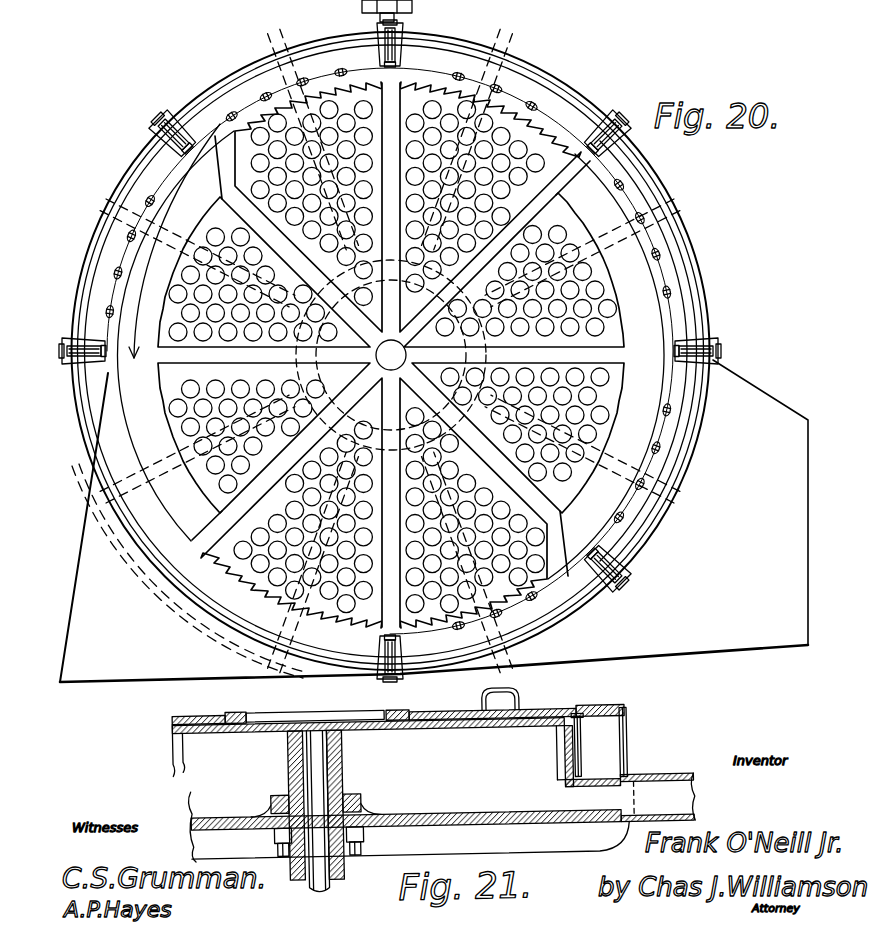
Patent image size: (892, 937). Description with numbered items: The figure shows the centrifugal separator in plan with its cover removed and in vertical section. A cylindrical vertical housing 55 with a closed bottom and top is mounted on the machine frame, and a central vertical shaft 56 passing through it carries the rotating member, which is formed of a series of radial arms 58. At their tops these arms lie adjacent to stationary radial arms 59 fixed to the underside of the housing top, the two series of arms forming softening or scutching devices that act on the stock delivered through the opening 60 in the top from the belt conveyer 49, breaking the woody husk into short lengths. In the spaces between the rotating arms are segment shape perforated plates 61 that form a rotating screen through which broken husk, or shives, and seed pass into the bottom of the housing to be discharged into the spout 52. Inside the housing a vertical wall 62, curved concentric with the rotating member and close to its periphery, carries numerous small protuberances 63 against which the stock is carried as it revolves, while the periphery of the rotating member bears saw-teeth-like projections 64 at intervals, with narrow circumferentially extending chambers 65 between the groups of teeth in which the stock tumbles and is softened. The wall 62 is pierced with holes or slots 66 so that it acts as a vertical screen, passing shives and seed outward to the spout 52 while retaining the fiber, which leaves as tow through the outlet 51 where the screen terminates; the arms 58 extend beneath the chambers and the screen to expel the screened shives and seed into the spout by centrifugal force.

In FIG. 21, the belt conveyer 49 is at (405, 711).
In FIG. 20, the outlet 51 is at (131, 667).
In FIG. 20, the spout 52 is at (434, 521).
In FIG. 21, the spout 52 is at (656, 789).
In FIG. 20, the housing 55 is at (667, 196).
In FIG. 21, the housing 55 is at (628, 742).
In FIG. 21, the central vertical shaft 56 is at (312, 765).
In FIG. 20, the radial arms 58 is at (393, 114).
In FIG. 21, the radial arms 58 is at (399, 749).
In FIG. 20, the radial arms 59 is at (510, 82).
In FIG. 21, the radial arms 59 is at (172, 738).
In FIG. 21, the opening 60 is at (492, 711).
In FIG. 20, the segment shape perforated plates 61 is at (566, 140).
In FIG. 20, the vertical wall 62 is at (150, 196).
In FIG. 21, the vertical wall 62 is at (582, 738).
In FIG. 20, the protuberances 63 is at (651, 250).
In FIG. 20, the saw-teeth-like projections 64 is at (286, 106).
In FIG. 20, the chambers 65 is at (160, 219).
In FIG. 20, the holes or slots 66 is at (684, 291).